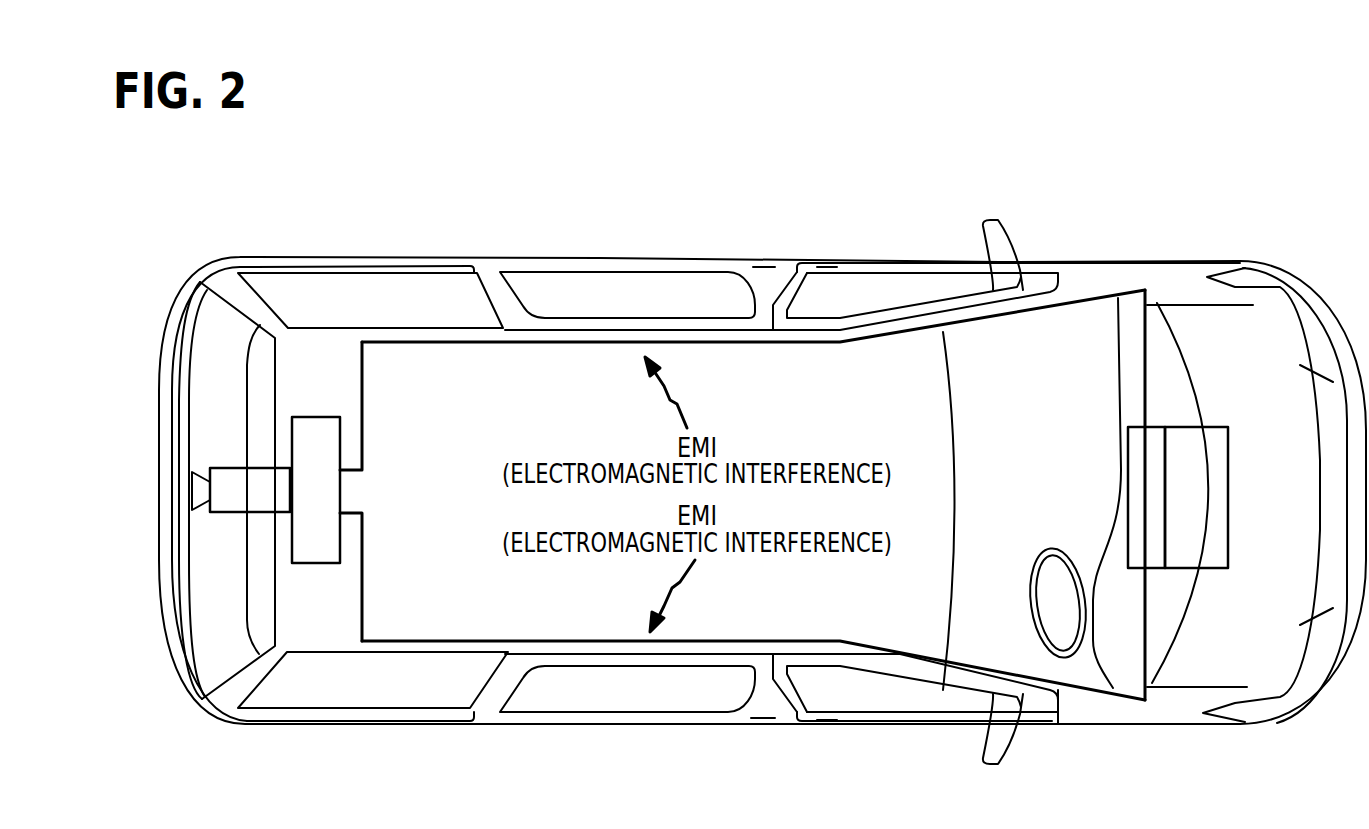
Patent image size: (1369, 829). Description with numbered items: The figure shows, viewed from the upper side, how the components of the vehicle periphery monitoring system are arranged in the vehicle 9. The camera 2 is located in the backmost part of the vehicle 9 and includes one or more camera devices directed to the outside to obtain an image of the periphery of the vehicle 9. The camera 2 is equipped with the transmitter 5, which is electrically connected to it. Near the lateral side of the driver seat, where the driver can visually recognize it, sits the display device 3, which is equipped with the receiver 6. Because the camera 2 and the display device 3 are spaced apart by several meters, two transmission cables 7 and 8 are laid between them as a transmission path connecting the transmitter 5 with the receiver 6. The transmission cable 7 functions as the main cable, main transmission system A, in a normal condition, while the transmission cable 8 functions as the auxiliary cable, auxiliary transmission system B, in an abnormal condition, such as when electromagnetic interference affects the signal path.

The camera 2 is at (228, 513).
The display device 3 is at (1231, 495).
The transmitter 5 is at (314, 416).
The receiver 6 is at (1124, 518).
The transmission cable 7 is at (481, 346).
The transmission cable 8 is at (481, 640).
The vehicle 9 is at (1197, 262).